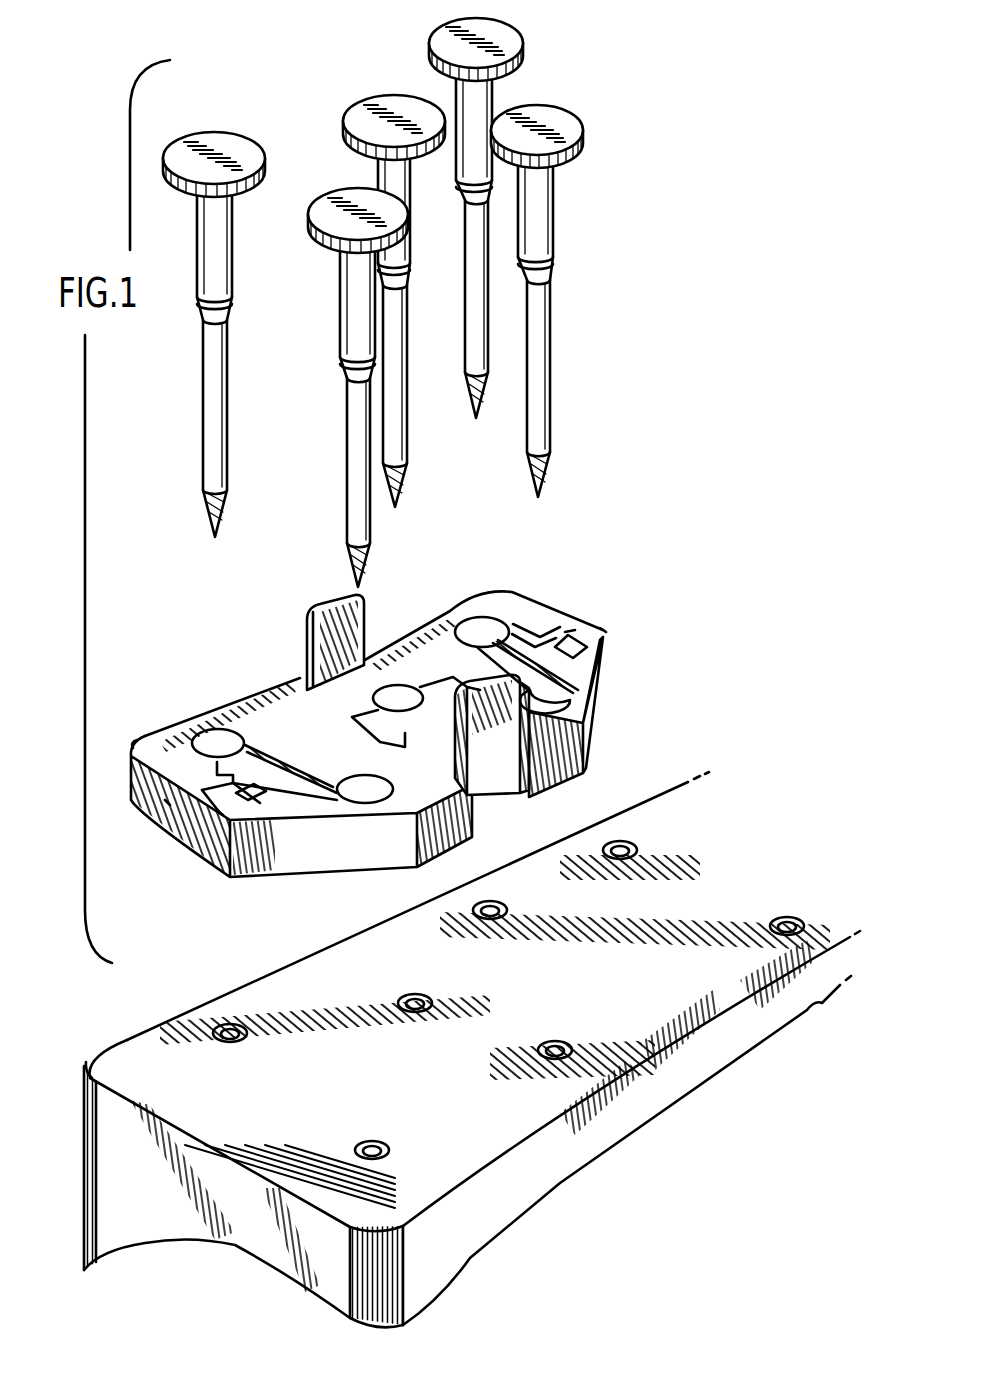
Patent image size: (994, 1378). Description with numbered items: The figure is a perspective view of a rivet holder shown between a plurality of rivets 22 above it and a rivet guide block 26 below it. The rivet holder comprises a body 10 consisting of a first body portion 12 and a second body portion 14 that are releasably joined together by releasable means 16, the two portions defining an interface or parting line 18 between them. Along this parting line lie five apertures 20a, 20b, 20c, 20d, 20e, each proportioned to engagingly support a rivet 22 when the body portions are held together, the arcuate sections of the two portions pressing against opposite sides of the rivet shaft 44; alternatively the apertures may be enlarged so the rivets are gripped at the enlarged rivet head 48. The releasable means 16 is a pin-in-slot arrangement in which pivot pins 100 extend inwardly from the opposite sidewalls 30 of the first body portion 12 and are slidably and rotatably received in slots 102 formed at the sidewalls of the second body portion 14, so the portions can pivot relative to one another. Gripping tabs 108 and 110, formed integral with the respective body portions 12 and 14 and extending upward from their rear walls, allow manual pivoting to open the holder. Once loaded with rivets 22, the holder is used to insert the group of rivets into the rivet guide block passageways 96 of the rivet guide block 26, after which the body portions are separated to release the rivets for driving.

The body 10 is at (472, 672).
The first body portion 12 is at (412, 715).
The second body portion 14 is at (472, 995).
The releasable means 16 is at (605, 632).
The interface or parting line 18 is at (287, 758).
The aperture 20a is at (218, 740).
The aperture 20b is at (356, 800).
The aperture 20c is at (372, 698).
The aperture 20d is at (492, 630).
The aperture 20e is at (558, 702).
The rivet 22 is at (405, 302).
The rivet guide block 26 is at (124, 1034).
The sidewall 30 is at (570, 630).
The rivet shaft 44 is at (232, 256).
The rivet head 48 is at (400, 102).
The rivet guide block passageway 96 is at (612, 860).
The pivot pin 100 is at (590, 641).
The slot 102 is at (560, 640).
The gripping tab 108 is at (320, 640).
The gripping tab 110 is at (490, 750).